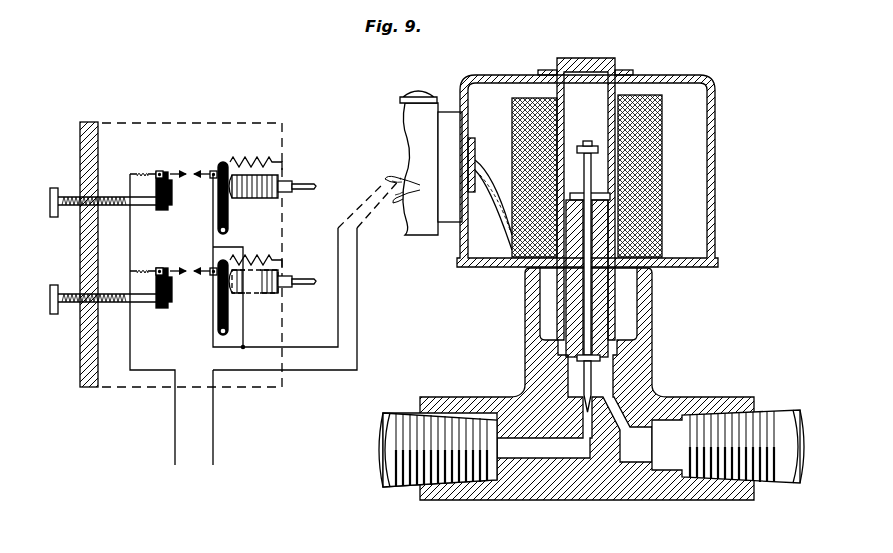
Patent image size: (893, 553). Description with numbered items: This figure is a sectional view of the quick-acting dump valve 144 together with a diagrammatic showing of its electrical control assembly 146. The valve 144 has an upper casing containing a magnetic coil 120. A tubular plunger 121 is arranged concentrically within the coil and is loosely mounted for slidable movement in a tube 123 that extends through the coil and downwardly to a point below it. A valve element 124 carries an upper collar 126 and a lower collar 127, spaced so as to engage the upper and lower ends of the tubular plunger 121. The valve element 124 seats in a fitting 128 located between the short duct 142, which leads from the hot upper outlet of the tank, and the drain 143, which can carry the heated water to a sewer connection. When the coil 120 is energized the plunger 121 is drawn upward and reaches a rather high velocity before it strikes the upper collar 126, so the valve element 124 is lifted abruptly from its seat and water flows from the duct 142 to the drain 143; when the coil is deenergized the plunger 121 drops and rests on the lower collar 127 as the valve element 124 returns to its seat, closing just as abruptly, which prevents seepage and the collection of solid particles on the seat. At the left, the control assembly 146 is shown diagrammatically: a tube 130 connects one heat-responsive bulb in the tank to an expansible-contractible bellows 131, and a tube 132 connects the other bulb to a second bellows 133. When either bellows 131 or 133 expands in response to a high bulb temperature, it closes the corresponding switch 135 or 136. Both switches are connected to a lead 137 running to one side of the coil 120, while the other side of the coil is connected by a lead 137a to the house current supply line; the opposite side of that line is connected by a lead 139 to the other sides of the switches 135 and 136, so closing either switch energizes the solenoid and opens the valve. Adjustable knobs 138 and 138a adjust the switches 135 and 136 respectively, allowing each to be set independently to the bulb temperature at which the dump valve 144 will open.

The magnetic coil 120 is at (652, 147).
The tubular plunger 121 is at (575, 289).
The tube 123 is at (560, 112).
The valve element 124 is at (588, 377).
The upper collar 126 is at (595, 146).
The lower collar 127 is at (578, 359).
The fitting 128 is at (534, 393).
The tube 130 is at (305, 186).
The expansible-contractible bellows 131 is at (256, 198).
The tube 132 is at (312, 277).
The expansible-contractible bellows 133 is at (266, 304).
The switch 135 is at (191, 167).
The switch 136 is at (191, 262).
The lead 137 is at (338, 333).
The lead 137a is at (213, 428).
The adjustable knob 138 is at (55, 188).
The adjustable knob 138a is at (55, 285).
The lead 139 is at (175, 428).
The short duct 142 is at (779, 412).
The drain 143 is at (385, 449).
The quick-acting dump valve 144 is at (741, 133).
The control assembly 146 is at (118, 396).